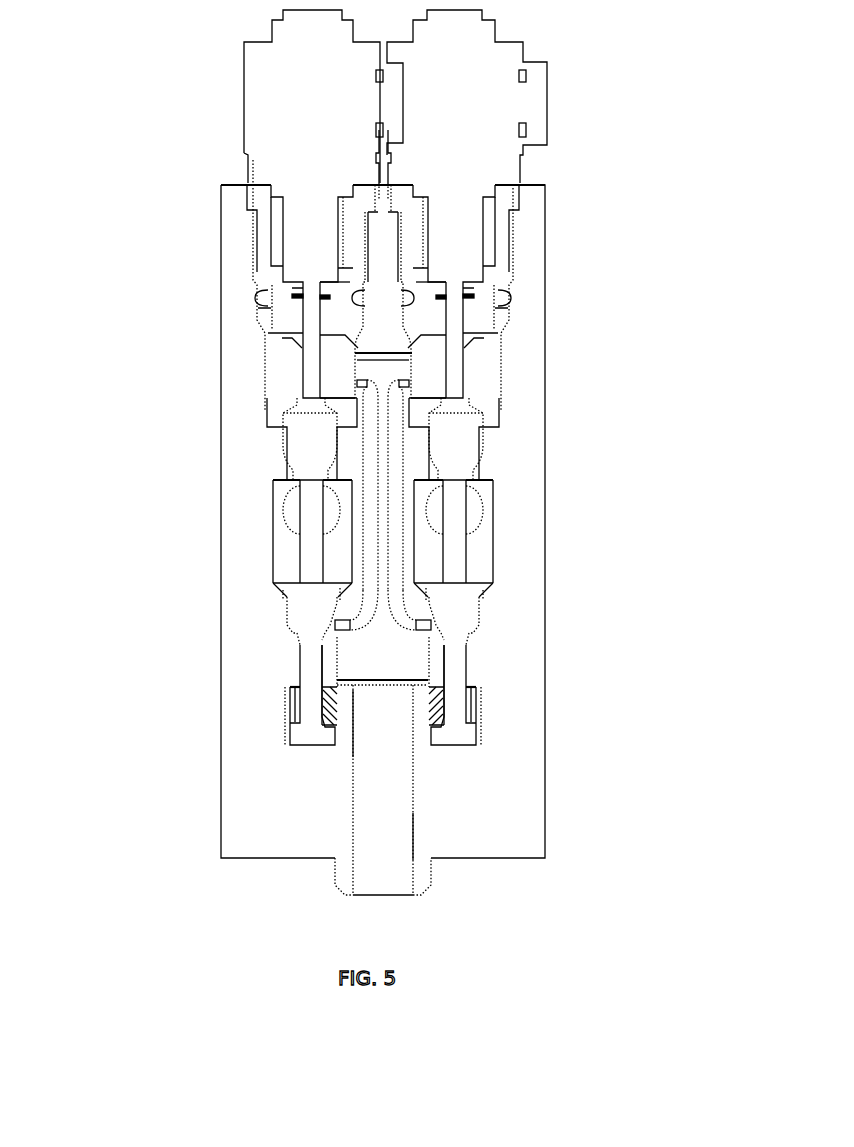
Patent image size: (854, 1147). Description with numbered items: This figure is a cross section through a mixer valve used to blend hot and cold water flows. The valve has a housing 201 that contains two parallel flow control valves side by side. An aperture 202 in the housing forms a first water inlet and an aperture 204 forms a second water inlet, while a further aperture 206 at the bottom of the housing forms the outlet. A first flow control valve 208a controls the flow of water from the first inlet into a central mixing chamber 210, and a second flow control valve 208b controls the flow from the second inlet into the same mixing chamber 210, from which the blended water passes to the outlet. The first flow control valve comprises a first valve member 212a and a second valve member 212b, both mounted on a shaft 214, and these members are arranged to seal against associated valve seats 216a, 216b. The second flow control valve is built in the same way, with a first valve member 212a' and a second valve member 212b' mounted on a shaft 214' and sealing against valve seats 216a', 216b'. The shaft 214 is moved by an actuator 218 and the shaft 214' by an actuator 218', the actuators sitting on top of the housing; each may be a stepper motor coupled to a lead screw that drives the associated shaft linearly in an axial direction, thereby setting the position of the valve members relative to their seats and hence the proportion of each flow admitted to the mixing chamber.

The housing 201 is at (221, 212).
The aperture forming first water inlet 202 is at (285, 503).
The aperture forming second water inlet 204 is at (483, 515).
The aperture forming outlet 206 is at (408, 847).
The first flow control valve 208a is at (295, 360).
The second flow control valve 208b is at (488, 372).
The mixing chamber 210 is at (402, 666).
The first valve member 212a is at (197, 439).
The first valve member 212a' is at (554, 439).
The second valve member 212b is at (208, 671).
The second valve member 212b' is at (559, 671).
The shaft 214 is at (205, 531).
The shaft 214' is at (532, 533).
The valve seat 216a is at (204, 412).
The valve seat 216a' is at (535, 439).
The valve seat 216b is at (200, 591).
The valve seat 216b' is at (577, 600).
The actuator 218 is at (313, 99).
The actuator 218' is at (461, 105).